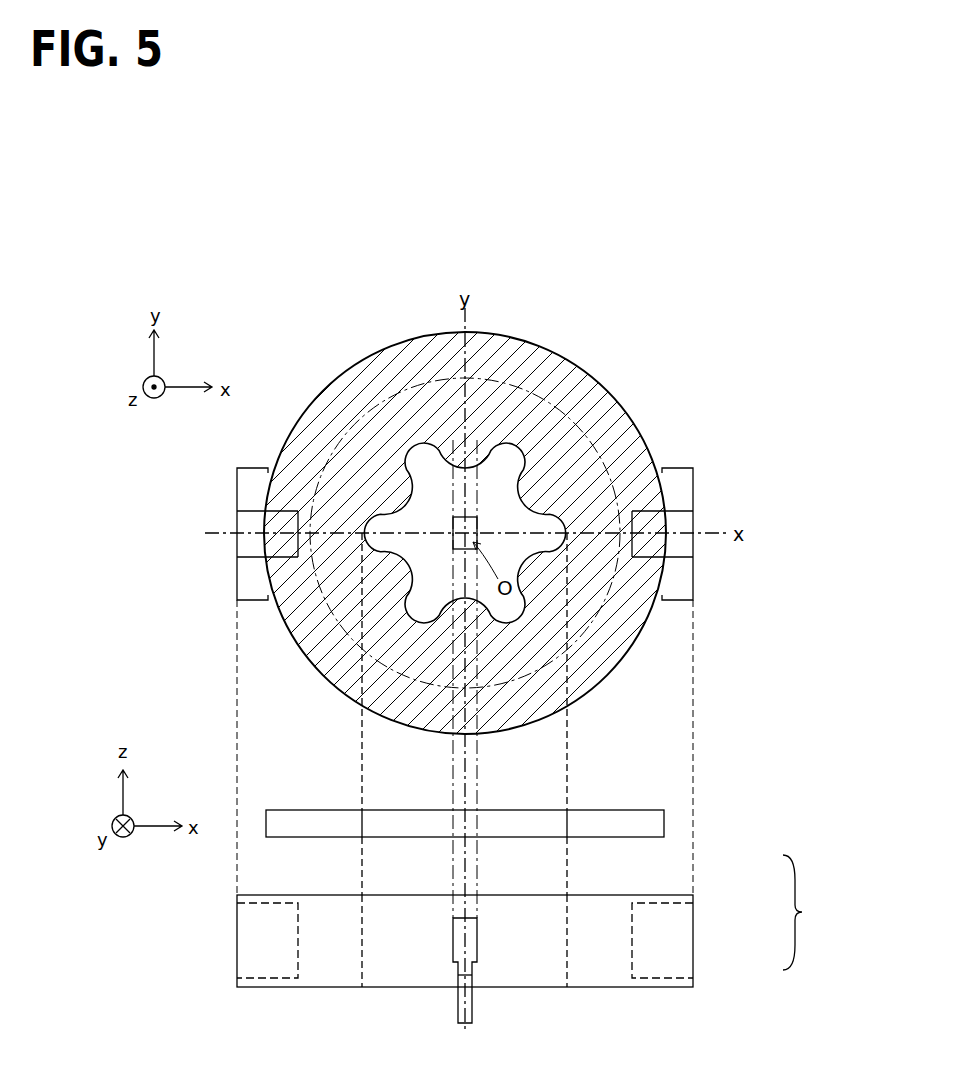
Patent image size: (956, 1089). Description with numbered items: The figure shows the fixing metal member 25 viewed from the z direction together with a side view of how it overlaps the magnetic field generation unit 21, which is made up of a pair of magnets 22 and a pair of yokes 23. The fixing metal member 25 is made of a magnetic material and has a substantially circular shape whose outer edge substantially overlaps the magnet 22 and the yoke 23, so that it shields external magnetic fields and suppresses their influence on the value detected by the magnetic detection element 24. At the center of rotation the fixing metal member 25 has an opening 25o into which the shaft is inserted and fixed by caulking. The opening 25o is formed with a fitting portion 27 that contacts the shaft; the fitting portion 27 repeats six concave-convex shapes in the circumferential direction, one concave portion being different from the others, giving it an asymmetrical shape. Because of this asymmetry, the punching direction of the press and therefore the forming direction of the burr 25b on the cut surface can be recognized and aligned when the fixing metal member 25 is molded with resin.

The magnetic field generation unit 21 is at (812, 912).
The magnet 22 is at (237, 548).
The yoke 23 is at (285, 622).
The magnetic detection element 24 is at (453, 517).
The fixing metal member 25 is at (570, 362).
The burr 25b is at (575, 802).
The opening 25o is at (517, 507).
The fitting portion 27 is at (632, 511).